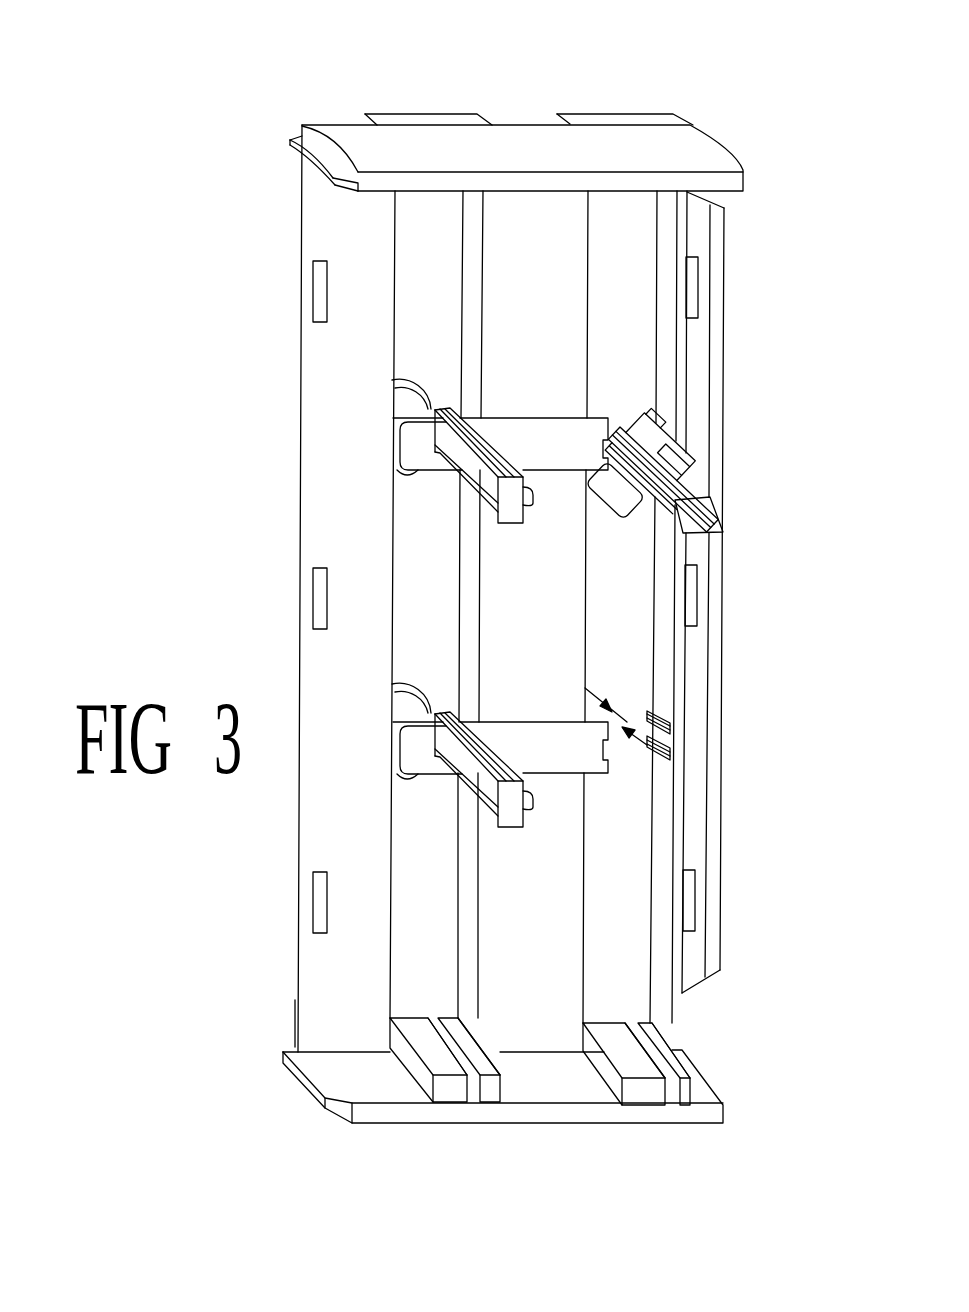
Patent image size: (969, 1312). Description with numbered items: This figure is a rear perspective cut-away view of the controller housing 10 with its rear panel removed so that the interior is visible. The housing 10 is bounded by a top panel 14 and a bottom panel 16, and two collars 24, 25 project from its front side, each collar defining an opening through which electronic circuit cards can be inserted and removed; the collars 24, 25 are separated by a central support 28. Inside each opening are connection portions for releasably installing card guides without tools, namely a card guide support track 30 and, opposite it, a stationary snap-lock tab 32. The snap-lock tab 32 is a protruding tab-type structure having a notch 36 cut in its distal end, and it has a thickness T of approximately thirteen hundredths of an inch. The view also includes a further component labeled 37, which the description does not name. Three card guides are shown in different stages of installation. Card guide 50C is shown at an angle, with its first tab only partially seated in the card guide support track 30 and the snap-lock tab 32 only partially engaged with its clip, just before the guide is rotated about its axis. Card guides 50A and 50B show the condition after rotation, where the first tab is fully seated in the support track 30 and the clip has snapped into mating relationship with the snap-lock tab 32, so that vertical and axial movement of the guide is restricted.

The controller housing 10 is at (421, 60).
The top panel 14 is at (698, 141).
The bottom panel 16 is at (560, 1095).
The collar 24 is at (668, 213).
The collar 25 is at (475, 271).
The central support 28 is at (533, 210).
The card guide support track 30 is at (677, 750).
The snap-lock tab 32 is at (597, 418).
The notch 36 is at (611, 748).
The mounting bracket 37 is at (532, 428).
The card guide 50A is at (468, 488).
The card guide 50B is at (462, 785).
The card guide 50C is at (723, 525).
The thickness T is at (616, 704).